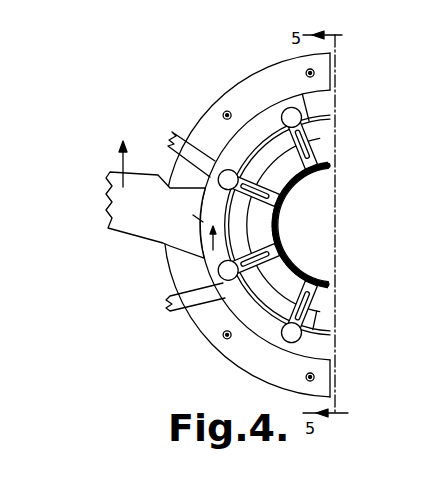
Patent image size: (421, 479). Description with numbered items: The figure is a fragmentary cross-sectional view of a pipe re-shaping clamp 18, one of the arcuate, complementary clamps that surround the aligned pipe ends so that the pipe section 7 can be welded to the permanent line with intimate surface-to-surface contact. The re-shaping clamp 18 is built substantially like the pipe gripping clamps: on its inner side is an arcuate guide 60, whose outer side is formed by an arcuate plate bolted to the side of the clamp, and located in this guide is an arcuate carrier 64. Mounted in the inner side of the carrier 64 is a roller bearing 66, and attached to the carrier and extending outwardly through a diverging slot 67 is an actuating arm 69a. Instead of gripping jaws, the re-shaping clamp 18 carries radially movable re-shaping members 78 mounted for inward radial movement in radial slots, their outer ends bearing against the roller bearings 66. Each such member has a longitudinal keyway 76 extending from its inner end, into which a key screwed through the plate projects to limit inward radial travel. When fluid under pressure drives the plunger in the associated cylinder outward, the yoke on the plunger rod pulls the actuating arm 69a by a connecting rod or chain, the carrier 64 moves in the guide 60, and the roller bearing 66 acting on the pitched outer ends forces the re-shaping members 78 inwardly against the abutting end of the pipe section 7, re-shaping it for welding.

The pipe re-shaping clamp 18 is at (244, 86).
The arcuate guide 60 is at (222, 140).
The pipe section 7 is at (290, 298).
The longitudinal keyway 76 is at (285, 251).
The re-shaping member 78 is at (318, 148).
The arcuate carrier 64 is at (216, 266).
The actuating arm 69a is at (131, 228).
The diverging slot 67 is at (185, 170).
The roller bearing 66 is at (218, 278).